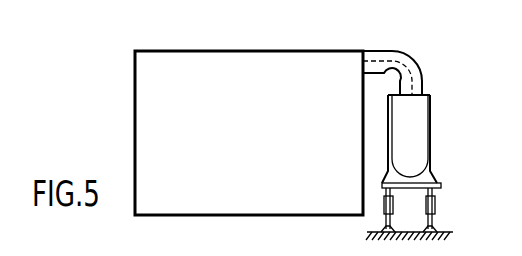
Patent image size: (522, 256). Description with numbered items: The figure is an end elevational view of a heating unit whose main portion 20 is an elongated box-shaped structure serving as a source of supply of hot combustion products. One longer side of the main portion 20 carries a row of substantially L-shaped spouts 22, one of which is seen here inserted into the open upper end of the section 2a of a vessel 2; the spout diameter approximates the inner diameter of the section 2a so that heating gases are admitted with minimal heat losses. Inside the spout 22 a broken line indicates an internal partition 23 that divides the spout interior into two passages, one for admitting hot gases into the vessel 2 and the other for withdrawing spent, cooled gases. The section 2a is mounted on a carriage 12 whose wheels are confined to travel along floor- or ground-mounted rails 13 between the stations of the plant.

The main portion 20 is at (150, 98).
The spout 22 is at (417, 67).
The internal partition 23 is at (406, 66).
The vessel 2 is at (432, 128).
The section 2a is at (424, 148).
The carriage 12 is at (441, 186).
The rails 13 is at (437, 216).